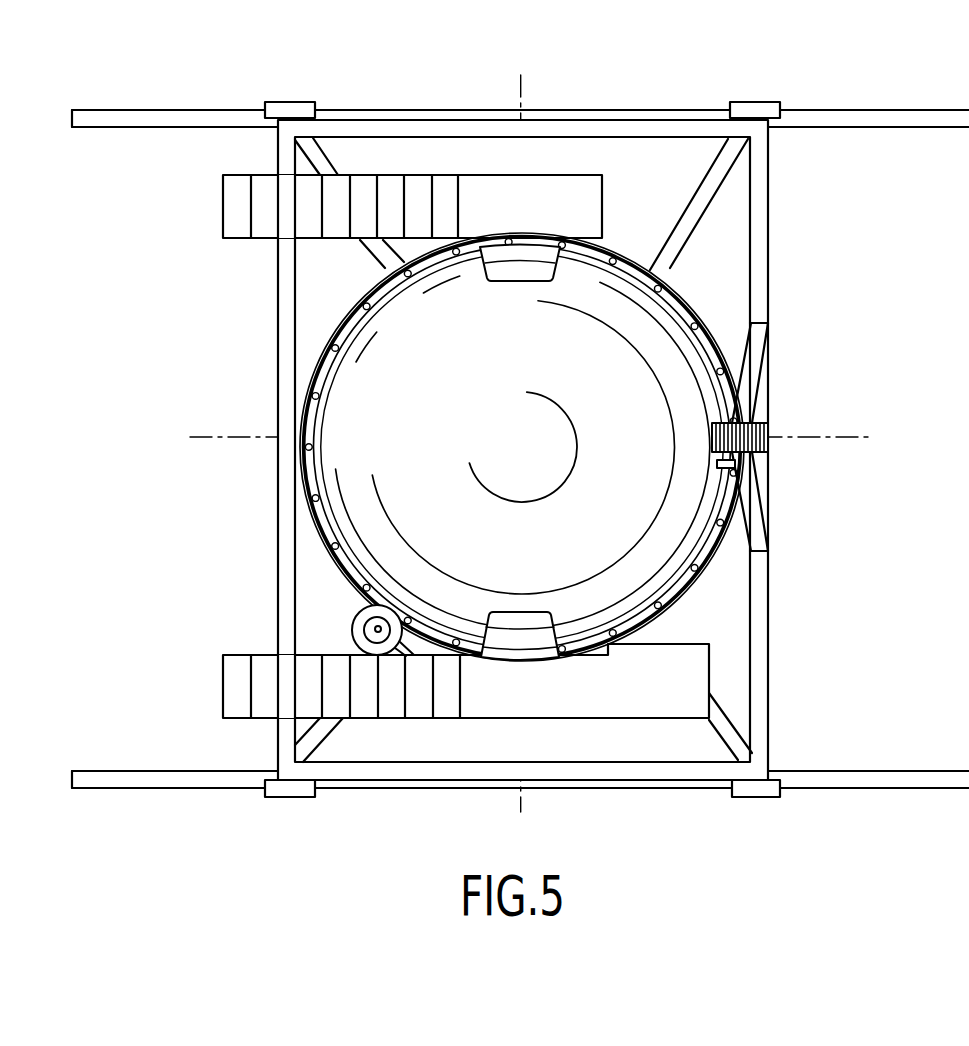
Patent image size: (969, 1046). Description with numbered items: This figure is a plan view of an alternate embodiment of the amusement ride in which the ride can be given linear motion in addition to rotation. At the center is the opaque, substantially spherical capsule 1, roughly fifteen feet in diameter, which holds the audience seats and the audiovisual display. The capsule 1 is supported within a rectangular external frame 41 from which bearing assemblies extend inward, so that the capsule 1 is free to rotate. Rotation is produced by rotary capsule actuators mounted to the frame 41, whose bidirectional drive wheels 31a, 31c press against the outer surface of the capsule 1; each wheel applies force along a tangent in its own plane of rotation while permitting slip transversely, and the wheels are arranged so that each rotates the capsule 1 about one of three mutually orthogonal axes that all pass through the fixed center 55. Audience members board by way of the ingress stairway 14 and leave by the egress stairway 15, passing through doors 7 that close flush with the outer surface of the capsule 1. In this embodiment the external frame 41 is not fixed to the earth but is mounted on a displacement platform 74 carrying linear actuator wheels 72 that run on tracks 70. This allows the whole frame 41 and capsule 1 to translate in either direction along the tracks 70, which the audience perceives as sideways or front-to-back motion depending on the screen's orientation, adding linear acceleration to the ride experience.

The spherical capsule 1 is at (582, 377).
The doors 7 is at (490, 268).
The ingress stairway 14 is at (251, 242).
The egress stairway 15 is at (262, 656).
The bidirectional drive wheel 31a is at (355, 637).
The bidirectional drive wheel 31c is at (755, 452).
The external frame 41 is at (278, 343).
The fixed center 55 is at (521, 441).
The tracks 70 is at (902, 128).
The linear actuator wheels 72 is at (282, 102).
The displacement platform 74 is at (723, 190).